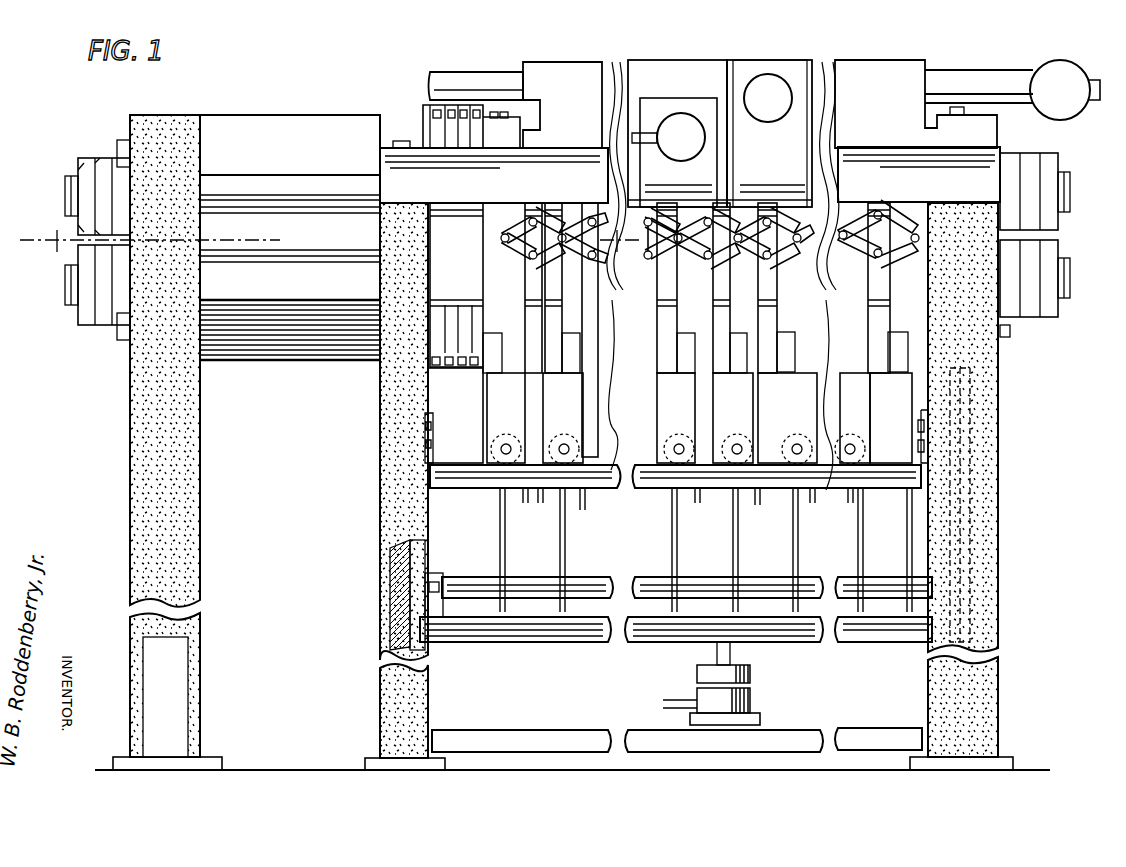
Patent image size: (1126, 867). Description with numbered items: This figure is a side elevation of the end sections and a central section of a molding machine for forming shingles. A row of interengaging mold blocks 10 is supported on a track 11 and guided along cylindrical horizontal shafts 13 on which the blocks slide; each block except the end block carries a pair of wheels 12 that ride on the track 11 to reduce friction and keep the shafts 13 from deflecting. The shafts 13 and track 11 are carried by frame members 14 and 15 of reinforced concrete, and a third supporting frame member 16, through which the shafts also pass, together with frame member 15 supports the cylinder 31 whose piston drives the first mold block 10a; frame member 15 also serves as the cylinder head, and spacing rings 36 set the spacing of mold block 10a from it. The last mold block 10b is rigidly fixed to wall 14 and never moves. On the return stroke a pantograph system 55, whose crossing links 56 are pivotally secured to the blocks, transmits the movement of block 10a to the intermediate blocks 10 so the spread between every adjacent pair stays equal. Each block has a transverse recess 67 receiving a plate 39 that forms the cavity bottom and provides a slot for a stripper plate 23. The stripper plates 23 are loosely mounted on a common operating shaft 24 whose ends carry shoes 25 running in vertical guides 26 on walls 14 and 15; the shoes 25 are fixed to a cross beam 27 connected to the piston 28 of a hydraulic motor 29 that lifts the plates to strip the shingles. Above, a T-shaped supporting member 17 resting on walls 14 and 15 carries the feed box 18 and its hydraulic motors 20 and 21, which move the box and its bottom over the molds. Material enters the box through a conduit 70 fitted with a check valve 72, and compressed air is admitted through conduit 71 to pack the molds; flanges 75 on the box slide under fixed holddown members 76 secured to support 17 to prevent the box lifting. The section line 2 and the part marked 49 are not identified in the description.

The section line 2 is at (330, 243).
The mold blocks 10 is at (720, 398).
The first mold block 10a is at (500, 392).
The end mold block 10b is at (915, 318).
The track 11 is at (468, 478).
The wheels 12 is at (513, 470).
The shafts 13 is at (250, 280).
The frame member 14 is at (985, 420).
The frame member 15 is at (390, 432).
The third supporting frame member 16 is at (140, 400).
The T-shaped supporting member 17 is at (455, 175).
The feed box 18 is at (683, 77).
The hydraulic motor 20 is at (768, 85).
The hydraulic motor 21 is at (687, 130).
The stripper plate 23 is at (560, 548).
The common operating shaft 24 is at (597, 580).
The shoe 25 is at (420, 577).
The vertical guides 26 is at (415, 552).
The cross beam 27 is at (500, 640).
The piston 28 is at (703, 660).
The hydraulic motor 29 is at (748, 698).
The cylinder 31 is at (250, 358).
The spacing rings 36 is at (440, 325).
The plate 39 is at (665, 345).
The pin 49 is at (585, 506).
The pantograph system 55 is at (572, 252).
The pantograph links 56 is at (842, 247).
The transverse recess 67 is at (568, 355).
The conduit 70 is at (988, 77).
The conduit 71 is at (447, 70).
The check valve 72 is at (1068, 85).
The flanges 75 is at (510, 137).
The holddown members 76 is at (487, 118).